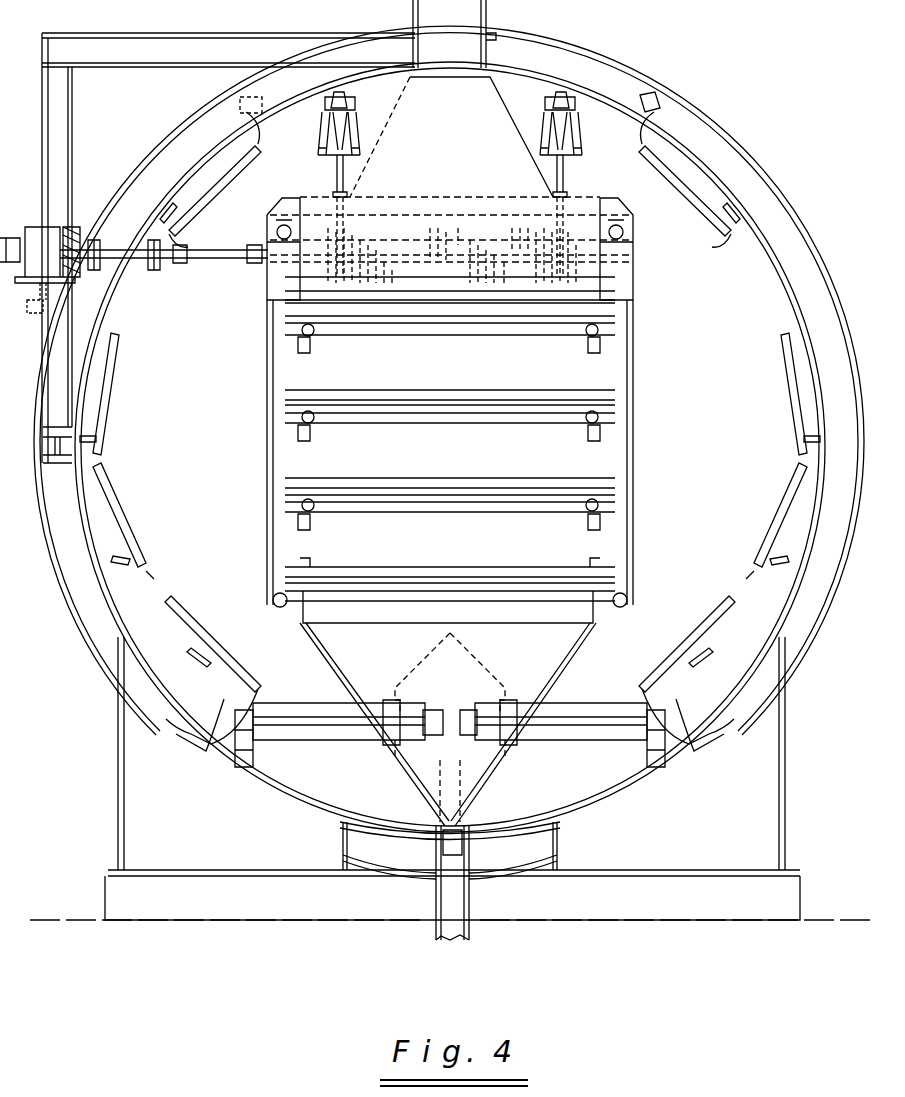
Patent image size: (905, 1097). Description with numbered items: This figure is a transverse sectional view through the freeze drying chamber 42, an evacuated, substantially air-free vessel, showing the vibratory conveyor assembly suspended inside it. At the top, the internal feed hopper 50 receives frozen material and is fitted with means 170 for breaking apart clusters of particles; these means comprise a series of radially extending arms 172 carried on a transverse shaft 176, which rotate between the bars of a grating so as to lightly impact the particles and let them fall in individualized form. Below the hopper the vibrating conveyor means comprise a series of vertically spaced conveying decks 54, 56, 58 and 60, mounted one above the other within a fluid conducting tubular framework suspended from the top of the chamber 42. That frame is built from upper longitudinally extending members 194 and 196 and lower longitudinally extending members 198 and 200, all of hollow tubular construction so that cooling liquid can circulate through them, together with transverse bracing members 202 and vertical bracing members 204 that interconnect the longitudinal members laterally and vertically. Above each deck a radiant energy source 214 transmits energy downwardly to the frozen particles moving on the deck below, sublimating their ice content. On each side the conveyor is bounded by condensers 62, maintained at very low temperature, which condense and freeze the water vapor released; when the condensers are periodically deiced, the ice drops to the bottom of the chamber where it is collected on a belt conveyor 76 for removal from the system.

The freeze drying chamber 42 is at (694, 152).
The internal feed hopper 50 is at (322, 185).
The upper conveying deck 54 is at (512, 320).
The conveying deck 56 is at (501, 391).
The conveying deck 58 is at (498, 478).
The conveying deck 60 is at (478, 570).
The condenser 62 is at (122, 402).
The belt conveyor 76 is at (303, 700).
The means to break apart clusters 170 is at (460, 210).
The radially extending arms 172 is at (370, 235).
The transverse shaft 176 is at (228, 263).
The upper longitudinally extending member 194 is at (633, 238).
The upper longitudinally extending member 196 is at (268, 240).
The lower longitudinally extending member 198 is at (627, 595).
The lower longitudinally extending member 200 is at (273, 594).
The transverse bracing member 202 is at (450, 413).
The vertical bracing member 204 is at (273, 403).
The radiant energy source 214 is at (440, 340).